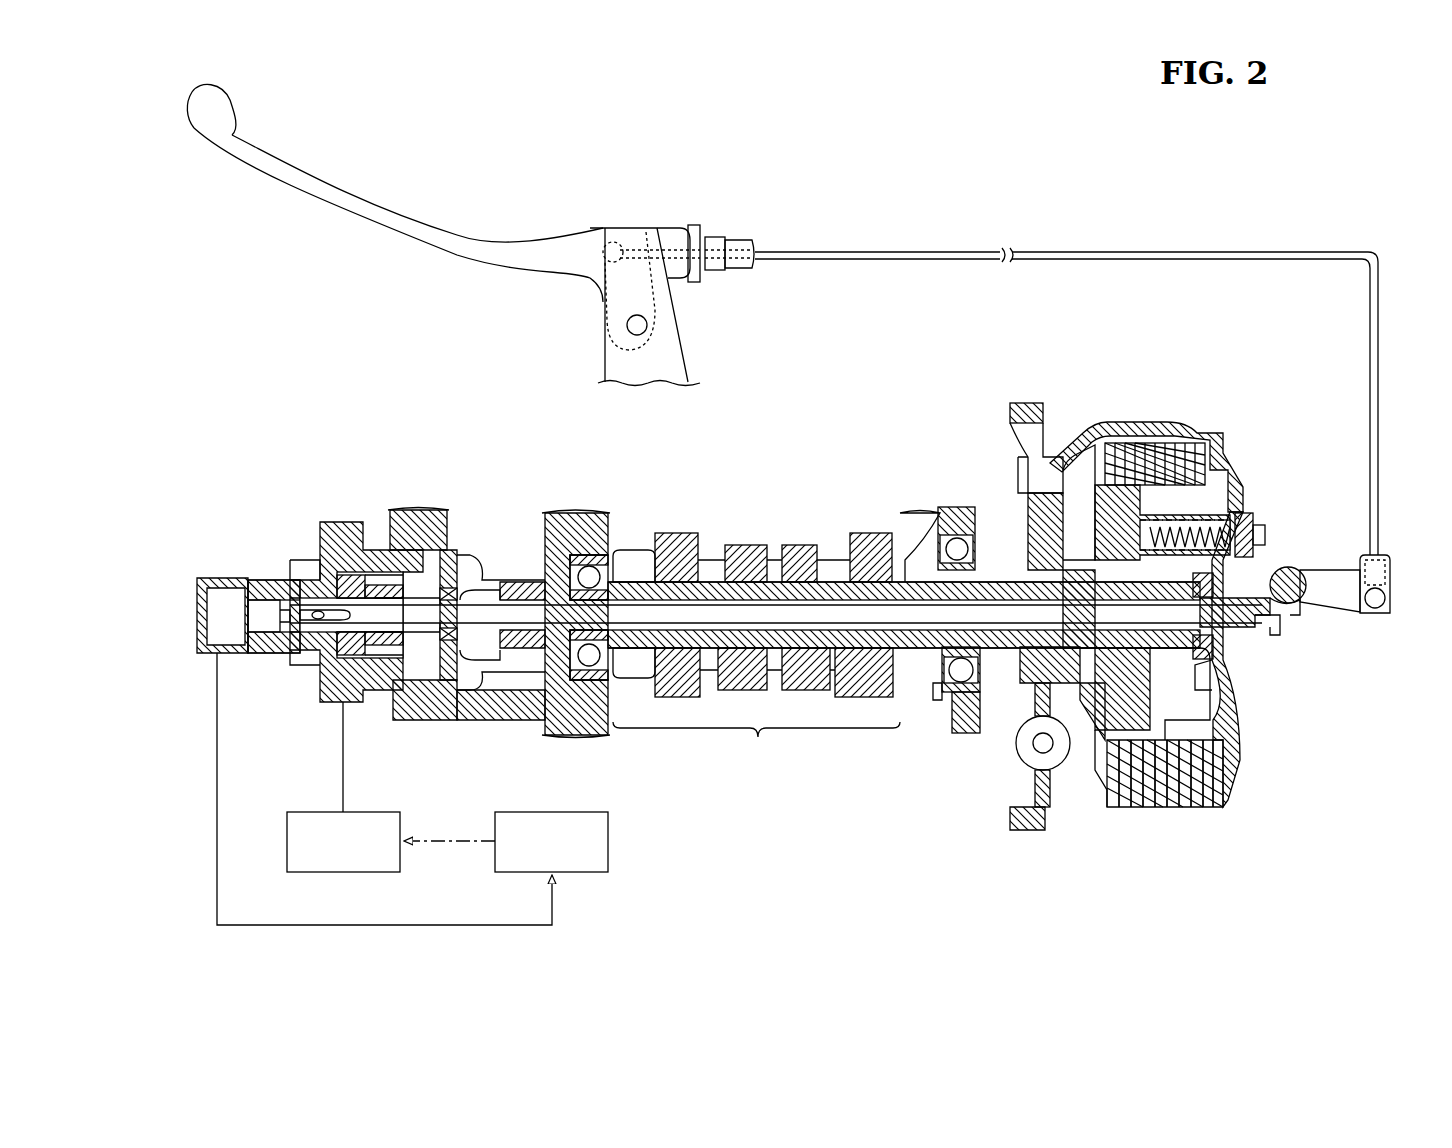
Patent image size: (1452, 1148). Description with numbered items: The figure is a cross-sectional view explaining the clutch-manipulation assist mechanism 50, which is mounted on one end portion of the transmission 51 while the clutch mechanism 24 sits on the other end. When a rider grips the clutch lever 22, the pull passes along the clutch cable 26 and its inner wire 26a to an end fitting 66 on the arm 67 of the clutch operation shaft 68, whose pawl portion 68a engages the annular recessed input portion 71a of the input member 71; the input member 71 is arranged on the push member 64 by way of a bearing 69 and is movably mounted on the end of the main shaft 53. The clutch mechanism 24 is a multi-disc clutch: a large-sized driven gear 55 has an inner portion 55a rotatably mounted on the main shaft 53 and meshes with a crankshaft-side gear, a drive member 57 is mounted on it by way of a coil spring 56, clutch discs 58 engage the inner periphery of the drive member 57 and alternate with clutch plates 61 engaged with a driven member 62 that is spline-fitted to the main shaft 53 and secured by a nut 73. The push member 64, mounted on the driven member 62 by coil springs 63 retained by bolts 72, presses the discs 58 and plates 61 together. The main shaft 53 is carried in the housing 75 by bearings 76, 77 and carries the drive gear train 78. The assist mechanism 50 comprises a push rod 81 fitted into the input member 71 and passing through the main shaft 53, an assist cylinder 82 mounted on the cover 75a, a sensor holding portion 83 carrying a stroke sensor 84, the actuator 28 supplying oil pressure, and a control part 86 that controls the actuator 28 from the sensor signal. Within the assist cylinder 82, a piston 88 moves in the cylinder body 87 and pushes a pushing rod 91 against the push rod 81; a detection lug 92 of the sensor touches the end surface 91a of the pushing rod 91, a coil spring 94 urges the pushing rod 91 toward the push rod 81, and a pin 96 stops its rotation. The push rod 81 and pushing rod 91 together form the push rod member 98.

The clutch lever 22 is at (368, 213).
The clutch cable 26 is at (742, 236).
The cable inner wire 26a is at (1152, 250).
The clutch mechanism 24 is at (1160, 425).
The clutch-manipulation assist mechanism 50 is at (262, 432).
The transmission 51 is at (796, 478).
The main shaft 53 is at (835, 582).
The large-sized driven gear 55 is at (1028, 403).
The inner portion 55a is at (1078, 455).
The coil spring 56 is at (1023, 743).
The drive member 57 is at (1122, 433).
The clutch discs 58 is at (1119, 810).
The clutch plates 61 is at (1125, 810).
The driven member 62 is at (1102, 800).
The coil springs 63 is at (1205, 520).
The push member 64 is at (1245, 735).
The end fitting 66 is at (1392, 575).
The arm 67 is at (1325, 572).
The clutch operation shaft 68 is at (1305, 600).
The pawl portion 68a is at (1295, 606).
The bearing 69 is at (1222, 672).
The input member 71 is at (1238, 598).
The annular recessed input portion 71a is at (1275, 628).
The bolt 72 is at (1250, 520).
The nut 73 is at (1168, 660).
The housing 75 is at (563, 525).
The cover 75a is at (425, 520).
The bearing 76 is at (607, 555).
The bearing 77 is at (958, 507).
The drive gear train 78 is at (756, 653).
The push rod 81 is at (520, 580).
The assist cylinder 82 is at (337, 520).
The sensor holding portion 83 is at (278, 585).
The stroke sensor 84 is at (226, 598).
The control part 86 is at (548, 812).
The cylinder body 87 is at (348, 535).
The piston 88 is at (383, 560).
The pushing rod 91 is at (430, 690).
The end surface 91a is at (295, 560).
The detection lug 92 is at (285, 655).
The coil spring 94 is at (385, 690).
The pin 96 is at (312, 640).
The push rod member 98 is at (478, 545).
The actuator 28 is at (305, 812).